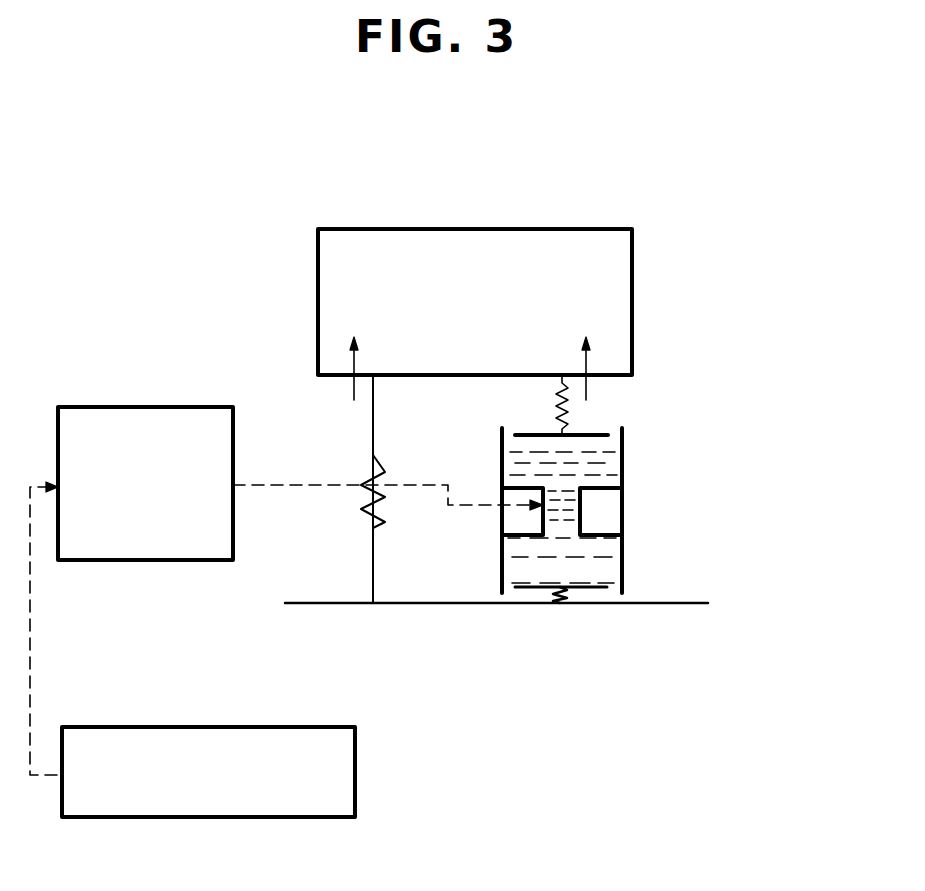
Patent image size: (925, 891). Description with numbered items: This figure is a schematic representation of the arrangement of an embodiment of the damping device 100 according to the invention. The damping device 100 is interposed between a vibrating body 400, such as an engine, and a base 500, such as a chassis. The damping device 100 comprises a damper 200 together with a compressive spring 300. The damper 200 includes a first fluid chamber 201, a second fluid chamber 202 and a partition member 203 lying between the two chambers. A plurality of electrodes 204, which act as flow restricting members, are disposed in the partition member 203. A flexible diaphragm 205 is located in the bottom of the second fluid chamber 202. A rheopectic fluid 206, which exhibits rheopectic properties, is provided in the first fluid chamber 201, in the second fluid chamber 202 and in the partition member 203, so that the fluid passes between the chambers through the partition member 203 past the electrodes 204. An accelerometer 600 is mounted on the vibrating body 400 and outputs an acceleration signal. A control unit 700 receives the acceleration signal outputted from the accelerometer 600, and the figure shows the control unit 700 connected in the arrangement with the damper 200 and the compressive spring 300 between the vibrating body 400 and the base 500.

The damping device 100 is at (450, 430).
The damper 200 is at (563, 502).
The first fluid chamber 201 is at (577, 453).
The second fluid chamber 202 is at (574, 553).
The partition member 203 is at (600, 482).
The electrodes 204 is at (567, 512).
The flexible diaphragm 205 is at (575, 598).
The rheopectic fluid 206 is at (523, 553).
The compressive spring 300 is at (367, 500).
The vibrating body 400 is at (539, 229).
The base 500 is at (687, 603).
The accelerometer 600 is at (267, 727).
The control unit 700 is at (176, 407).